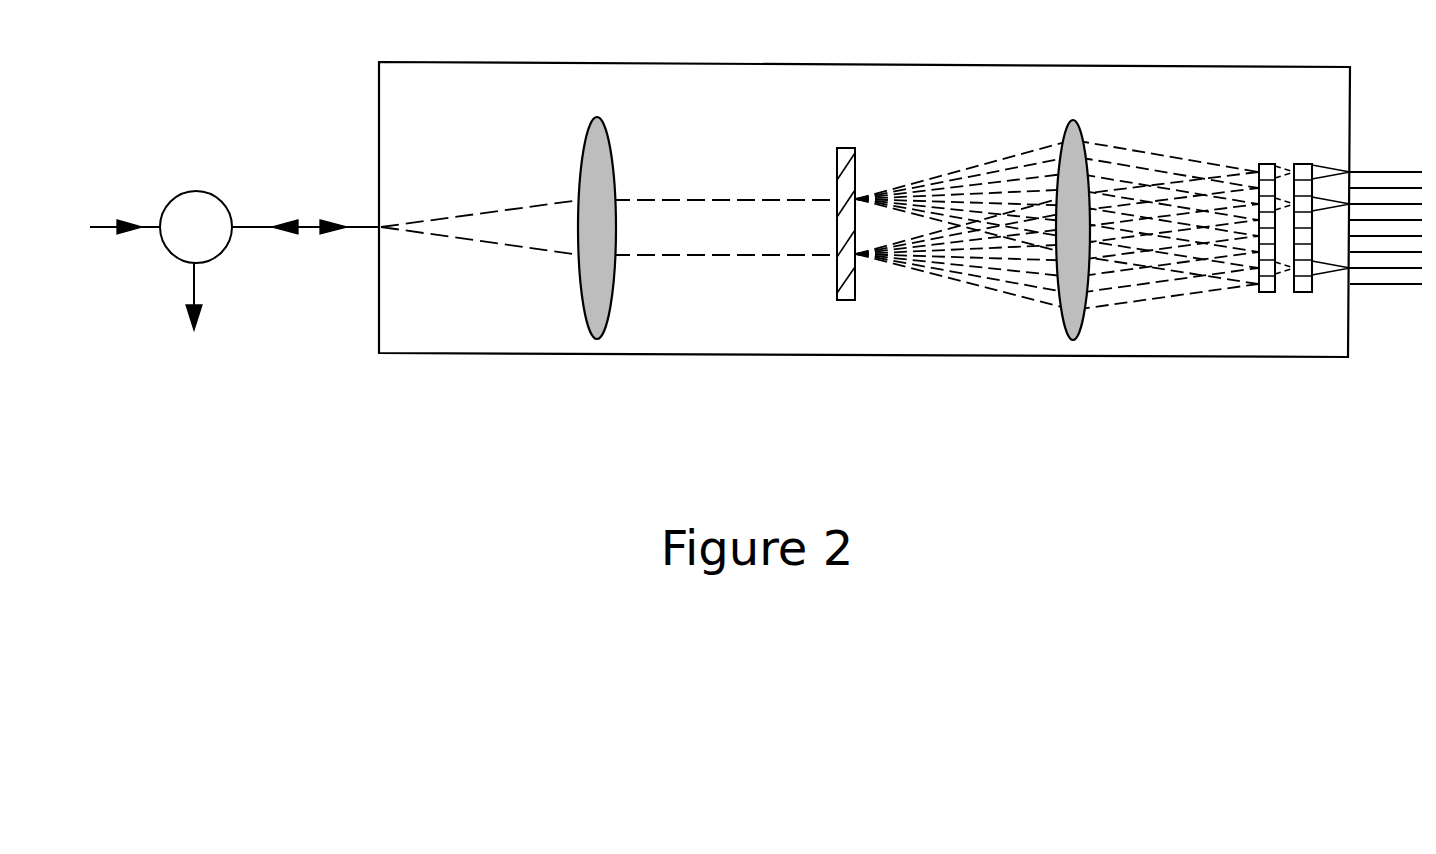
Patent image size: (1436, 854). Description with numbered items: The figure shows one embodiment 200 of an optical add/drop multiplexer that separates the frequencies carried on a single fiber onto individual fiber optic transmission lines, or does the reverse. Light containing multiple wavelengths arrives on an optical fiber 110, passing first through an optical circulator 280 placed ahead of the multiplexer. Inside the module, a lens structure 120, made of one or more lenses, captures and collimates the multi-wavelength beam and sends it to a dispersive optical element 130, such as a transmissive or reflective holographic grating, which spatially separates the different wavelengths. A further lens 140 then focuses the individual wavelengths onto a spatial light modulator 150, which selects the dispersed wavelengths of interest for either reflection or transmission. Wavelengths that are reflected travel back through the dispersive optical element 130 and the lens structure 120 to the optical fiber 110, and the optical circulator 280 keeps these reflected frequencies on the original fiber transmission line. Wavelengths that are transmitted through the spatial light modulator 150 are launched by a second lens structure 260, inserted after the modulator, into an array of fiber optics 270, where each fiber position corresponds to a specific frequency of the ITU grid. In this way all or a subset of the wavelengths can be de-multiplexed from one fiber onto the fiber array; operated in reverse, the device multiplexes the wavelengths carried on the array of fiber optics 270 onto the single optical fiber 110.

The optical add/drop multiplexer embodiment 200 is at (864, 192).
The optical circulator 280 is at (234, 241).
The optical fiber 110 is at (447, 296).
The lens structure 120 is at (703, 255).
The dispersive optical element 130 is at (841, 271).
The lens 140 is at (1057, 258).
The spatial light modulator 150 is at (1263, 280).
The lens structure 260 is at (1303, 135).
The array of fiber optics 270 is at (1389, 312).